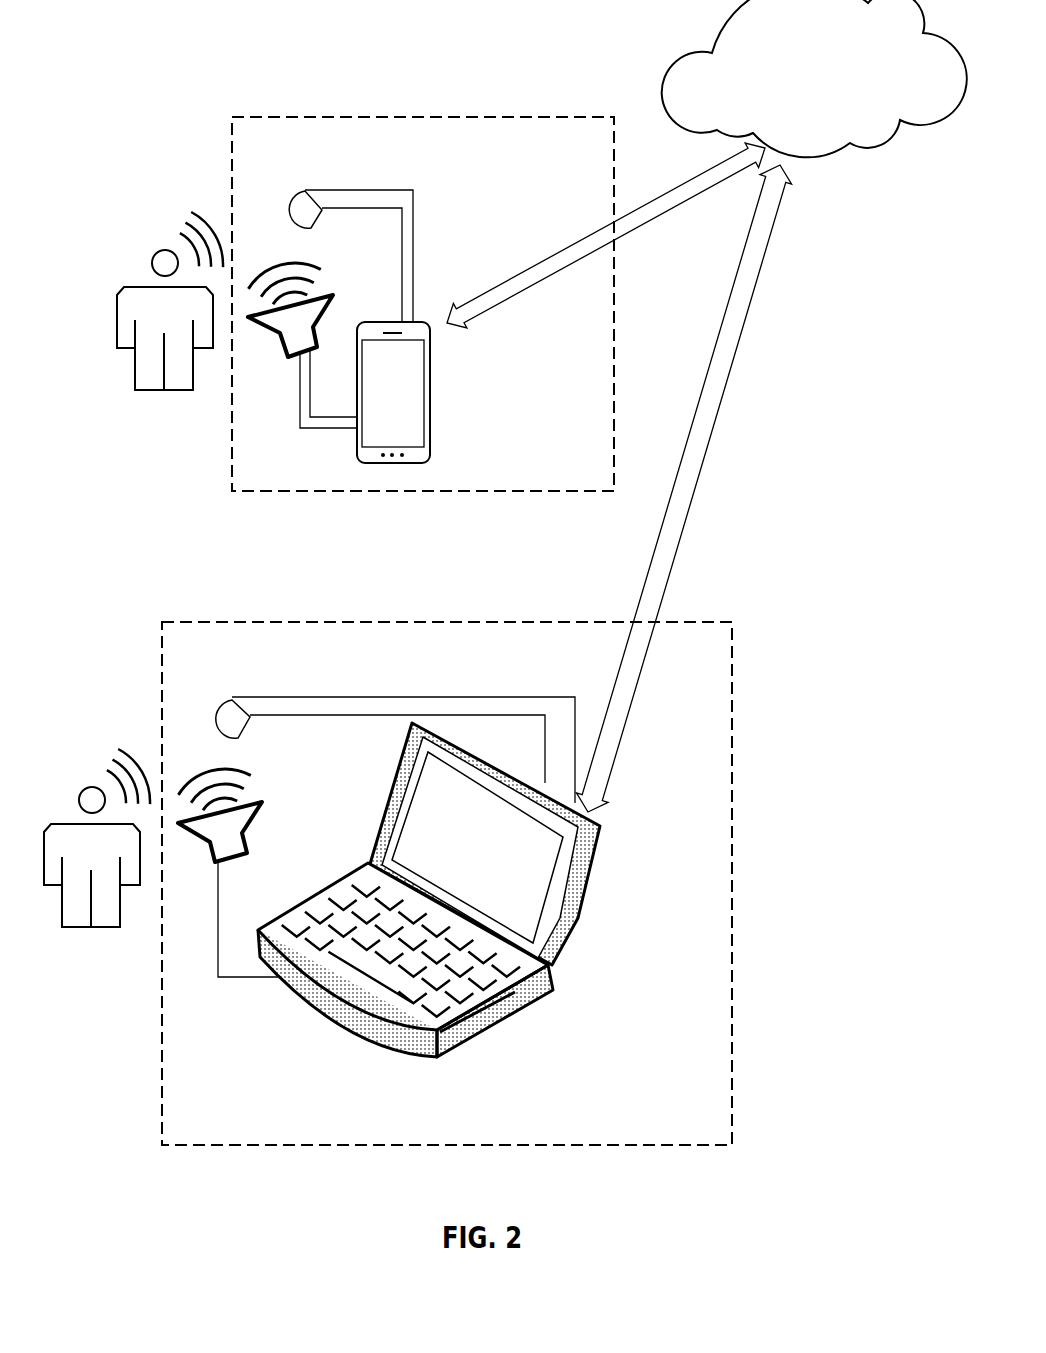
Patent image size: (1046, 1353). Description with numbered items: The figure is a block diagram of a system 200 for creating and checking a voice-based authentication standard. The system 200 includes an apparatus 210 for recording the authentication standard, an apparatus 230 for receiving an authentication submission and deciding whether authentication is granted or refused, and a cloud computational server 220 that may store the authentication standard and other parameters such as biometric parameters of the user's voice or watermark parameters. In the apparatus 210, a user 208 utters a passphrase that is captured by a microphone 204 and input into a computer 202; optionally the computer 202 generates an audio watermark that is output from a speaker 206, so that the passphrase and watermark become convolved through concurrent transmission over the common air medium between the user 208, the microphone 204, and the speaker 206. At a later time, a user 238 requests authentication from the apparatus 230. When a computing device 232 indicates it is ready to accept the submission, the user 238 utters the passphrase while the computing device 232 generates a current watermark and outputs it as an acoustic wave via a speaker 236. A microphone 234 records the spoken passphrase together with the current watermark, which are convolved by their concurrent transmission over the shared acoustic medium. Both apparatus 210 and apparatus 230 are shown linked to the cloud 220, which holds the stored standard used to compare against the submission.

The system 200 is at (112, 52).
The cloud computational server 220 is at (841, 62).
The apparatus to receive an authentication submission 230 is at (301, 156).
The computing device 232 is at (441, 392).
The microphone 234 is at (297, 246).
The speaker 236 is at (319, 342).
The user 238 is at (168, 321).
The apparatus to record an authentication standard 210 is at (711, 659).
The computer 202 is at (469, 890).
The microphone 204 is at (395, 730).
The speaker 206 is at (264, 861).
The user 208 is at (97, 860).